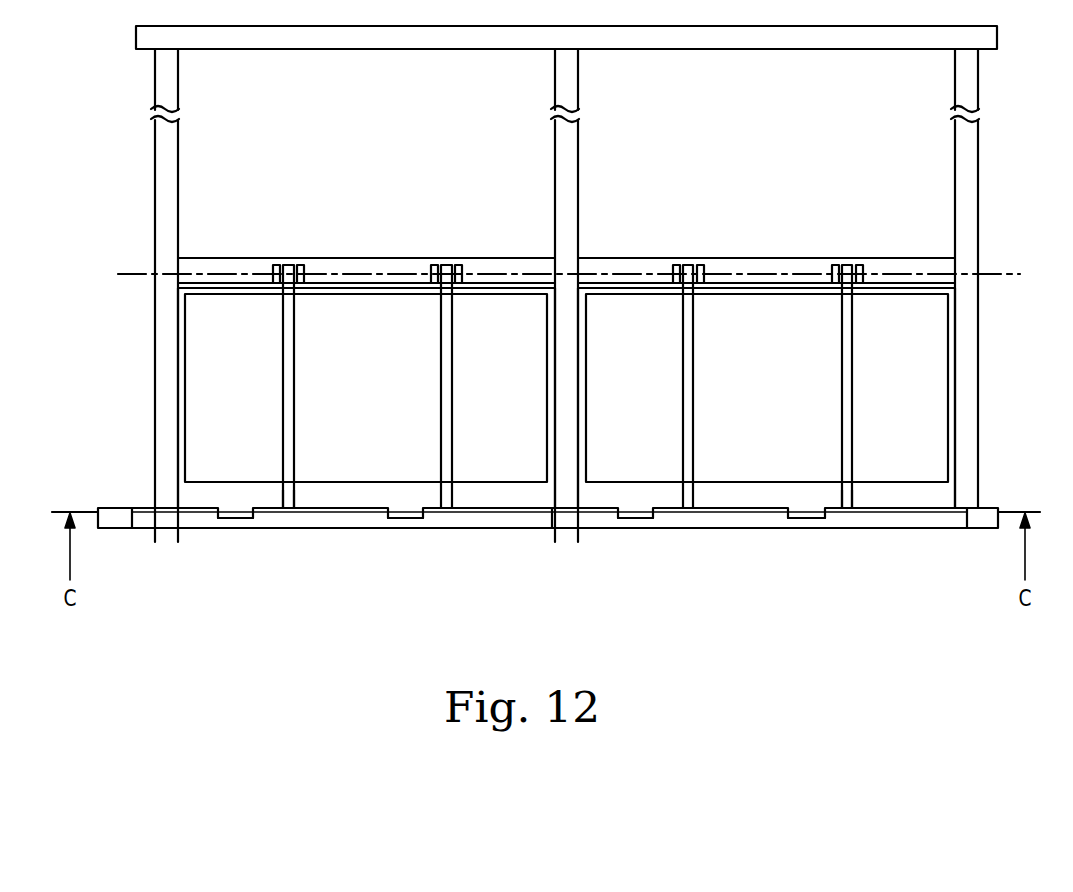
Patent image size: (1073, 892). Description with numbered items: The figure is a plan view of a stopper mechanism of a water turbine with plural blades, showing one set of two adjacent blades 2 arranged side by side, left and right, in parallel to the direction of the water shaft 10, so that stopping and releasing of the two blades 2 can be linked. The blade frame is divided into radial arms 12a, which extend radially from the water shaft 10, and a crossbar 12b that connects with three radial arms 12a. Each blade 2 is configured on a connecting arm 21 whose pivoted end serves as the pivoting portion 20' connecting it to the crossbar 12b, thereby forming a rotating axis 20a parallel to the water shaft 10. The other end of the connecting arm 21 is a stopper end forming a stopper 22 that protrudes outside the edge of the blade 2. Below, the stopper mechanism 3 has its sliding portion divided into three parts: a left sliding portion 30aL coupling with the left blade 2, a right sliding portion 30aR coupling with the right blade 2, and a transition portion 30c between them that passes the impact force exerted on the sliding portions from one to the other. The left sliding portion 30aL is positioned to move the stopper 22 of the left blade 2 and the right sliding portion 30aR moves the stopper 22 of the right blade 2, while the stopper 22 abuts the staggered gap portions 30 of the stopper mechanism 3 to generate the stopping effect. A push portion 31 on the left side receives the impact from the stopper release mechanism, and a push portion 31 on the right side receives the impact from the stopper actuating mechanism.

The water shaft 10 is at (357, 38).
The radial arm 12a is at (166, 80).
The crossbar 12b is at (368, 268).
The rotating axis 20a is at (517, 268).
The pivoting portion 20' is at (562, 232).
The connecting arm 21 is at (289, 394).
The stopper 22 is at (289, 503).
The blade 2 is at (353, 397).
The stopper mechanism 3 is at (548, 580).
The track notch / slot 30 is at (235, 518).
The left sliding portion 30aL is at (293, 518).
The right sliding portion 30aR is at (721, 520).
The transition portion 30c is at (563, 518).
The push portion 31 is at (116, 522).